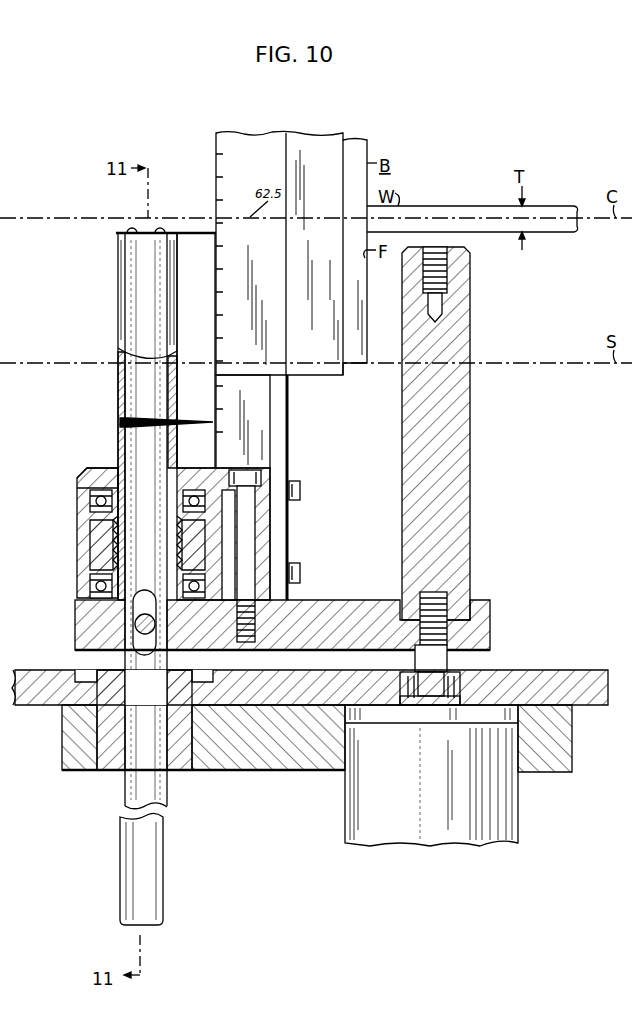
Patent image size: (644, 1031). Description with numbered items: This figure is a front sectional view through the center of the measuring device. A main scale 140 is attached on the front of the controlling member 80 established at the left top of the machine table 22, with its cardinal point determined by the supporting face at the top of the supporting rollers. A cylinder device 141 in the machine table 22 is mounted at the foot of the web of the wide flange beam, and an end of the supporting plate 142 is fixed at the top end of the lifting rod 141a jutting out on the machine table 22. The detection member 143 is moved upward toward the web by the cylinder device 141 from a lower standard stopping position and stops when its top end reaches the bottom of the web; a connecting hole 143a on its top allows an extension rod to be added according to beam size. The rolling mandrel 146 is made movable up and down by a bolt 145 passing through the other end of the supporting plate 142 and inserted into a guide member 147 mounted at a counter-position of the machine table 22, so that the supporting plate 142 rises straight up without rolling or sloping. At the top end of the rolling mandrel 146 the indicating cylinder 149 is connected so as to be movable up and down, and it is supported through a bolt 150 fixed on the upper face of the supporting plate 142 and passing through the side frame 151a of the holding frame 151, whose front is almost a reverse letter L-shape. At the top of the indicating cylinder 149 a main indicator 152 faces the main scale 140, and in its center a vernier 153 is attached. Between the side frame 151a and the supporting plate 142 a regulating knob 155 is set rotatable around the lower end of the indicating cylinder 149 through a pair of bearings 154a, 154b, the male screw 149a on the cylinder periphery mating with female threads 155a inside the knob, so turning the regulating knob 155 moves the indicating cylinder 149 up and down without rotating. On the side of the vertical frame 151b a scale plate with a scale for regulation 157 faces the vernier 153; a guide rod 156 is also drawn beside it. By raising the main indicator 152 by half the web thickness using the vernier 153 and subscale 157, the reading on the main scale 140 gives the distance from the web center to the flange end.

The controlling member 80 is at (305, 134).
The main scale 140 is at (216, 178).
The main indicator 152 is at (194, 233).
The indicating cylinder 149 is at (120, 388).
The scale for regulation 157 is at (216, 386).
The vernier 153 is at (122, 418).
The holding frame 151 is at (112, 450).
The side frame 151a is at (76, 479).
The bearing 154a is at (99, 502).
The male screw 149a is at (112, 538).
The female threads 155a is at (105, 565).
The regulating knob 155 is at (80, 582).
The bearing 154b is at (108, 610).
The bolt 145 is at (134, 626).
The guide member 147 is at (178, 771).
The rolling mandrel 146 is at (160, 831).
The guide rod 156 is at (288, 423).
The bolt 150 is at (266, 466).
The vertical frame 151b is at (268, 556).
The supporting plate 142 is at (333, 603).
The detection member 143 is at (402, 596).
The connecting hole 143a is at (445, 248).
The lifting rod 141a is at (450, 664).
The machine table 22 is at (584, 662).
The cylinder device 141 is at (348, 800).